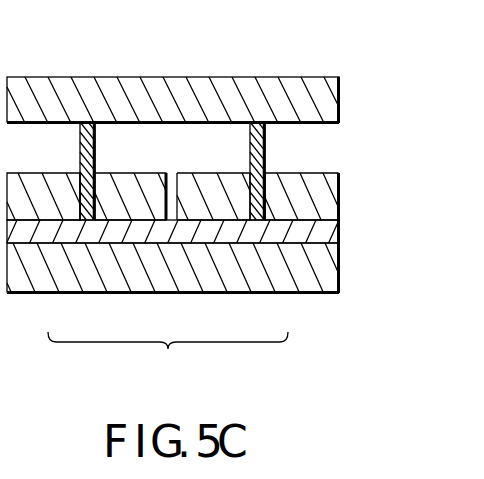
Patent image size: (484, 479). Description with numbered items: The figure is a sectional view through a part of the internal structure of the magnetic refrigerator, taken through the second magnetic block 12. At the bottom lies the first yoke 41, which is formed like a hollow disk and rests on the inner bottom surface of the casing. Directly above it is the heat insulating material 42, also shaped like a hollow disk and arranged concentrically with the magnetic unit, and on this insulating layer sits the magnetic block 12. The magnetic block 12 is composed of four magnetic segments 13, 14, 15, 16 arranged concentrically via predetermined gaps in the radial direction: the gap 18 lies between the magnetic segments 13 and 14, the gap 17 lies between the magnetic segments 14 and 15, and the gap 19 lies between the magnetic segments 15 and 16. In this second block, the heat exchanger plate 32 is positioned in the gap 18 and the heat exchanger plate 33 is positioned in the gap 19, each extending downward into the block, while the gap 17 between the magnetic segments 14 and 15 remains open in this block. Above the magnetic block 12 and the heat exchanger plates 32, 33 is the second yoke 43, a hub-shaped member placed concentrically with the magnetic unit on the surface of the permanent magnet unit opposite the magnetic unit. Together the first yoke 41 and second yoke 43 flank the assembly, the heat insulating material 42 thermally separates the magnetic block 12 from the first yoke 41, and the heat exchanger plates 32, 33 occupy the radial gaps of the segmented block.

The magnetic block 12 is at (168, 360).
The magnetic segment 13 is at (285, 207).
The magnetic segment 14 is at (213, 207).
The magnetic segment 15 is at (133, 207).
The magnetic segment 16 is at (52, 207).
The gap 17 is at (172, 182).
The gap 18 is at (265, 187).
The gap 19 is at (77, 192).
The heat exchanger plate 32 is at (259, 127).
The heat exchanger plate 33 is at (86, 128).
The first yoke 41 is at (323, 270).
The heat insulating material 42 is at (339, 228).
The second yoke 43 is at (35, 90).